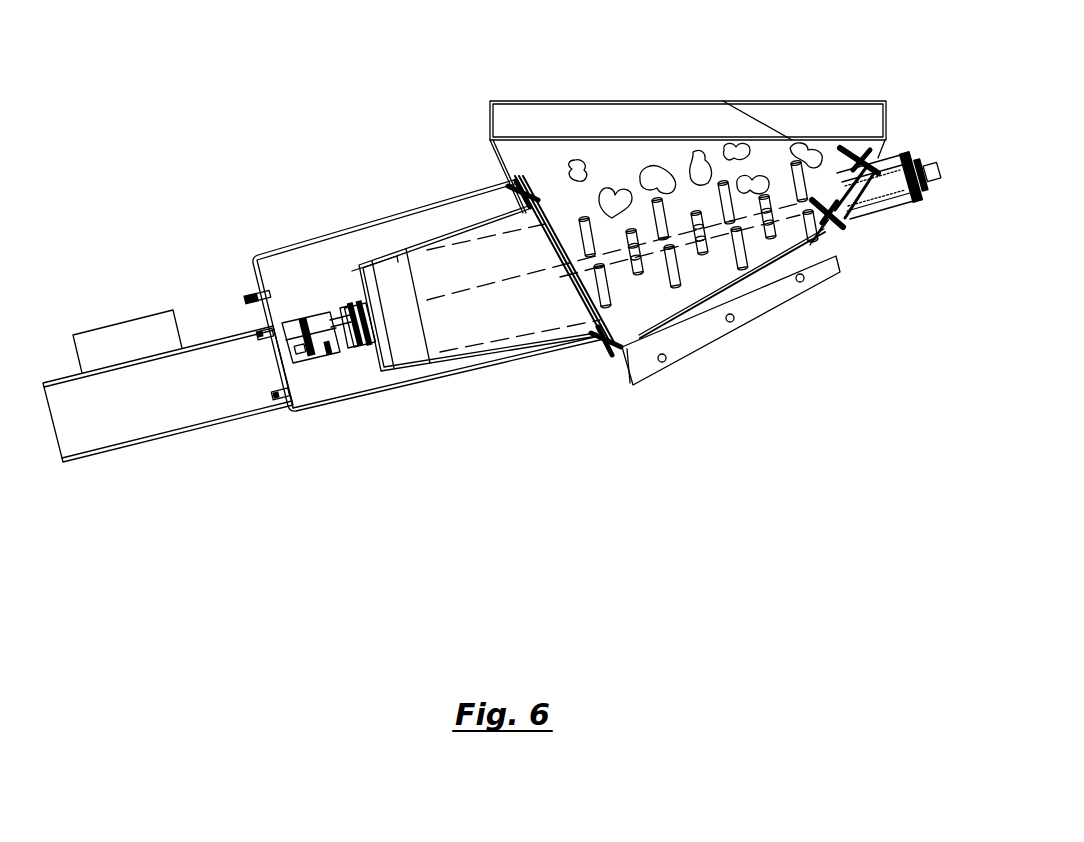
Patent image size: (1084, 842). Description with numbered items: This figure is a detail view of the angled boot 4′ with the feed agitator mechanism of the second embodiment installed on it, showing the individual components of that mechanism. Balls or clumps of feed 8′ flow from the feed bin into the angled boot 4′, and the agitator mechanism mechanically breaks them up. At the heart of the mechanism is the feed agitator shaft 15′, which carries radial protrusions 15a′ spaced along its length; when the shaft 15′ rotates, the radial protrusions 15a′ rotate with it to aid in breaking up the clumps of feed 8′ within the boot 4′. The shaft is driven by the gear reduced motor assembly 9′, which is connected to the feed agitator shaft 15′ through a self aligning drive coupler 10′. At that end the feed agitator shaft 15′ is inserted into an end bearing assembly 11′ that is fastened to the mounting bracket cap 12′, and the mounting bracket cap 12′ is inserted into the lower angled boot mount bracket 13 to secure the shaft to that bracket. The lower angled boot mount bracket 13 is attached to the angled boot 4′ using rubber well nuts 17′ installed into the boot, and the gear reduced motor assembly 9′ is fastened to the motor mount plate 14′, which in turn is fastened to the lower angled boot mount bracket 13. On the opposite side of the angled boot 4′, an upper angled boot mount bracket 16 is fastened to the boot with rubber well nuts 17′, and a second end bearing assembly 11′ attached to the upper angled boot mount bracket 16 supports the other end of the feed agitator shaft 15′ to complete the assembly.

The gear reduced motor assembly 9′ is at (192, 343).
The self aligning drive coupler 10′ is at (290, 320).
The end bearing assembly 11′ is at (352, 307).
The mounting bracket cap 12′ is at (356, 300).
The lower angled boot mount bracket 13 is at (452, 350).
The motor mount plate 14′ is at (487, 363).
The feed agitator shaft 15′ is at (553, 318).
The radial protrusions 15a′ is at (668, 284).
The angled boot 4′ is at (755, 300).
The feed 8′ is at (790, 141).
The upper angled boot mount bracket 16 is at (893, 150).
The rubber well nuts 17′ is at (530, 183).